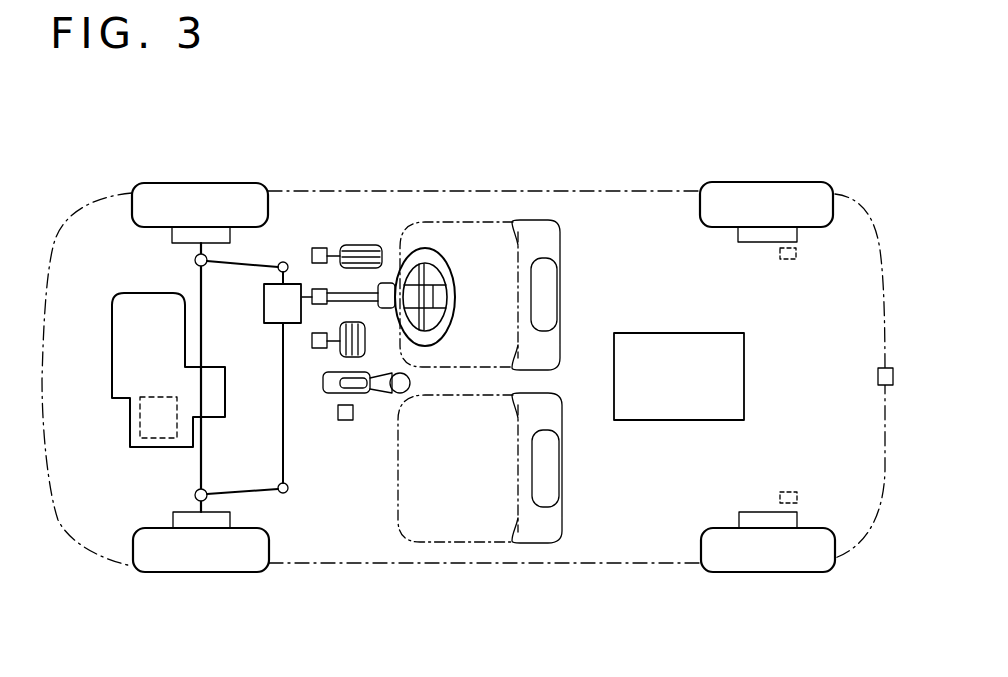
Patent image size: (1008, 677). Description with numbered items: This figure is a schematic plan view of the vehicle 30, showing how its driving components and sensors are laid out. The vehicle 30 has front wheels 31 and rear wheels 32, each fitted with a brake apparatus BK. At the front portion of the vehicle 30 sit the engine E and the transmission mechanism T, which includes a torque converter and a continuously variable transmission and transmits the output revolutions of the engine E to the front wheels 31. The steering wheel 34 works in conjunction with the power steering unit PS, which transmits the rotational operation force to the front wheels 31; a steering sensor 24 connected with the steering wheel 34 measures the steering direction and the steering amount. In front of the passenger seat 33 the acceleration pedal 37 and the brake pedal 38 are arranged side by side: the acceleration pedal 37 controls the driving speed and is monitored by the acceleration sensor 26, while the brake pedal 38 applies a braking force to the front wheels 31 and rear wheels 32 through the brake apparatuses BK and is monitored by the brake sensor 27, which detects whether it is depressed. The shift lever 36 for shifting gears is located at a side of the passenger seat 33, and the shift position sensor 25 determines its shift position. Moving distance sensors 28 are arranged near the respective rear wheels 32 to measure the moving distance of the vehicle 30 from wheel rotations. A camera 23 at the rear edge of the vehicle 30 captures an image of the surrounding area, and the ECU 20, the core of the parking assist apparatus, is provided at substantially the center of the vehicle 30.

The ECU (electronic control unit) 20 is at (662, 420).
The camera 23 is at (878, 375).
The steering sensor 24 is at (313, 290).
The shift position sensor 25 is at (345, 420).
The acceleration sensor 26 is at (318, 248).
The brake sensor 27 is at (320, 349).
The moving distance sensor 28 is at (788, 260).
The vehicle 30 is at (523, 177).
The front wheel 31 is at (192, 183).
The rear wheel 32 is at (763, 181).
The passenger seat 33 is at (566, 272).
The steering wheel 34 is at (457, 302).
The shift lever 36 is at (384, 392).
The acceleration pedal 37 is at (370, 244).
The brake pedal 38 is at (366, 339).
The brake apparatus BK is at (170, 240).
The engine E is at (112, 377).
The transmission mechanism T is at (140, 413).
The power steering unit PS is at (263, 296).